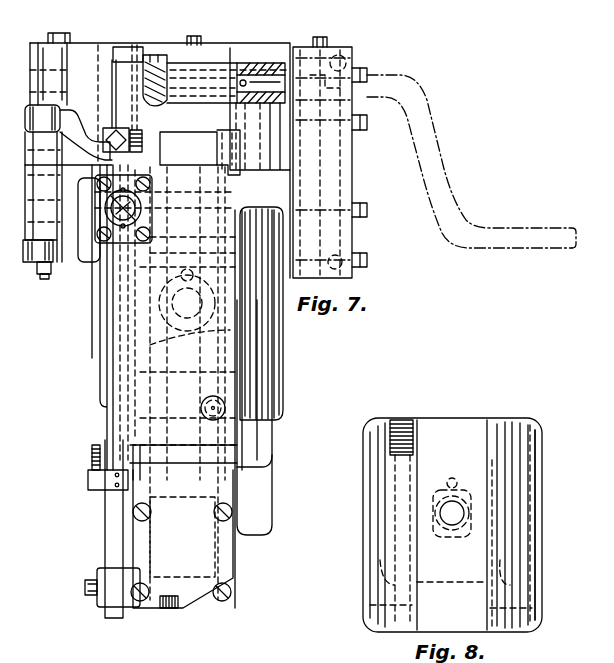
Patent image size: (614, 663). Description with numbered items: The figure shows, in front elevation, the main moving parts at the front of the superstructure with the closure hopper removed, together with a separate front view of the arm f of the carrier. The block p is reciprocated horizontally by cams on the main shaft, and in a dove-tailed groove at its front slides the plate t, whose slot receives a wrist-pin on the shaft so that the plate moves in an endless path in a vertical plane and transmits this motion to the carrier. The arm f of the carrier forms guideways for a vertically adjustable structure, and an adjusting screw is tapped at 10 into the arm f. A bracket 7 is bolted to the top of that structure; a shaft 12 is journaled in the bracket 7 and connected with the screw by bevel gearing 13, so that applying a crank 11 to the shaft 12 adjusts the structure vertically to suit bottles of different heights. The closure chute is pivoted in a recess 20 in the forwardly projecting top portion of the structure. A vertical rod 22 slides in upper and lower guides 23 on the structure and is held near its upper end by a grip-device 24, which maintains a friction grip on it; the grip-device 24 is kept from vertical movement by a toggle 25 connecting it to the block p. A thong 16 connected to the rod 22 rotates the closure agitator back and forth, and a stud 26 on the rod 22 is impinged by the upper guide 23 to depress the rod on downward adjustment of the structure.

In FIG. 7, the bracket 7 is at (227, 121).
In FIG. 8, the tapped portion of arm f 10 is at (434, 525).
In FIG. 7, the crank 11 is at (490, 243).
In FIG. 7, the shaft 12 is at (245, 62).
In FIG. 7, the bevel gearing 13 is at (152, 62).
In FIG. 7, the thong 16 is at (93, 460).
In FIG. 7, the recess 20 is at (200, 152).
In FIG. 7, the vertical rod 22 is at (108, 541).
In FIG. 7, the guides 23 is at (115, 135).
In FIG. 7, the grip-device 24 is at (107, 244).
In FIG. 7, the toggle 25 is at (100, 231).
In FIG. 7, the stud 26 is at (100, 172).
In FIG. 7, the block p is at (350, 190).
In FIG. 7, the arm of the carrier f is at (270, 378).
In FIG. 8, the arm of the carrier f is at (535, 488).
In FIG. 7, the plate t is at (268, 440).